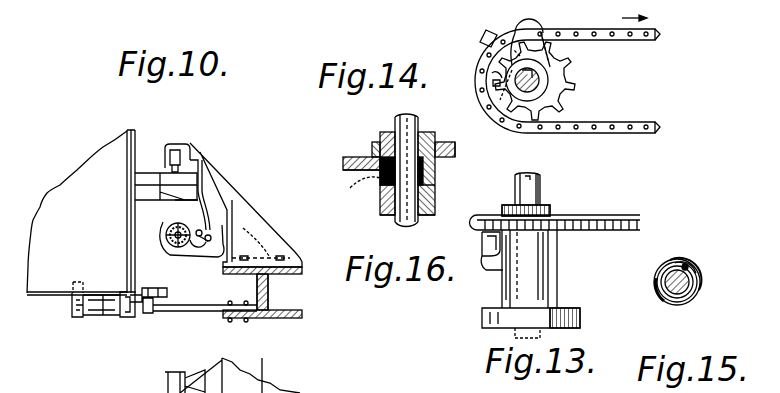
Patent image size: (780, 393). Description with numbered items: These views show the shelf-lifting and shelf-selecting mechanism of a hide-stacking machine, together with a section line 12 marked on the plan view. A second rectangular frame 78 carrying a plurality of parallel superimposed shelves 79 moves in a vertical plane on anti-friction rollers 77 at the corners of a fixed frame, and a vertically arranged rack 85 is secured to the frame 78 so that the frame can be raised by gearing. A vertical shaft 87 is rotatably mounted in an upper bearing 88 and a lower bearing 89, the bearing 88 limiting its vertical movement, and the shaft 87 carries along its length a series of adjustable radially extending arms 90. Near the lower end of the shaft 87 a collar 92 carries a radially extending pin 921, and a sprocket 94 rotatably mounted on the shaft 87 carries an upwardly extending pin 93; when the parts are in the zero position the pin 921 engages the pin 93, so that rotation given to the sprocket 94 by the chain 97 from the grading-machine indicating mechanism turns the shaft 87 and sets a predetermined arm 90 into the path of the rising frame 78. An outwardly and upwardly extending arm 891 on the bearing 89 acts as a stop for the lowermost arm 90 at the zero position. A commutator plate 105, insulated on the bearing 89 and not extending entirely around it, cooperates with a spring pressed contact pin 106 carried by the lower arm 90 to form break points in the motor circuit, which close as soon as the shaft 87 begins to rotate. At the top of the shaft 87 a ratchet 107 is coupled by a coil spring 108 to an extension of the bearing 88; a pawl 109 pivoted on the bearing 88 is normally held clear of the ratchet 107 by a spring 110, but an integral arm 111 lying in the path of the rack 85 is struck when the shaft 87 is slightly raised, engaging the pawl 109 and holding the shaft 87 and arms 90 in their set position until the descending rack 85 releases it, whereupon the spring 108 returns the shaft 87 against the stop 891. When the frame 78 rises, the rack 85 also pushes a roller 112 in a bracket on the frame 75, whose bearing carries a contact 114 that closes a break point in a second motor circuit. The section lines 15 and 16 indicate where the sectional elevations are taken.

In FIG. 10, the section line 12- 12 is at (200, 145).
In FIG. 13, the section line 15— 15 is at (470, 240).
In FIG. 15, the section line 16— 16 is at (678, 255).
In FIG. 10, the rectangular frame 75 is at (270, 297).
In FIG. 10, the anti-friction rollers 77 is at (175, 292).
In FIG. 10, the rectangular frame 78 is at (127, 227).
In FIG. 10, the shelves 79 is at (37, 285).
In FIG. 10, the rack 85 is at (160, 173).
In FIG. 10, the shaft 87 is at (166, 242).
In FIG. 14, the shaft 87 is at (546, 65).
In FIG. 16, the shaft 87 is at (397, 220).
In FIG. 13, the shaft 87 is at (540, 178).
In FIG. 15, the shaft 87 is at (690, 283).
In FIG. 10, the bearing 88 is at (215, 243).
In FIG. 16, the bearing 89 is at (380, 207).
In FIG. 13, the bearing 89 is at (510, 293).
In FIG. 15, the bearing 89 is at (695, 300).
In FIG. 16, the radially extending arms 90 is at (347, 157).
In FIG. 16, the arm 891 is at (347, 168).
In FIG. 13, the arm 891 is at (482, 237).
In FIG. 14, the collar 92 is at (550, 82).
In FIG. 16, the collar 92 is at (395, 128).
In FIG. 13, the collar 92 is at (552, 208).
In FIG. 14, the radially extending pin 921 is at (498, 73).
In FIG. 14, the pin 93 is at (492, 103).
In FIG. 13, the pin 93 is at (502, 210).
In FIG. 14, the sprocket 94 is at (560, 104).
In FIG. 14, the chain 97 is at (650, 122).
In FIG. 13, the chain 97 is at (640, 215).
In FIG. 16, the commutator plate 105 is at (377, 183).
In FIG. 15, the commutator plate 105 is at (643, 275).
In FIG. 10, the contact pin 106 is at (203, 235).
In FIG. 16, the contact pin 106 is at (382, 143).
In FIG. 13, the contact pin 106 is at (558, 250).
In FIG. 15, the contact pin 106 is at (689, 266).
In FIG. 10, the ratchet 107 is at (150, 392).
In FIG. 10, the coil spring 108 is at (200, 392).
In FIG. 10, the pawl 109 is at (195, 252).
In FIG. 10, the spring 110 is at (236, 214).
In FIG. 10, the arm 111 is at (207, 183).
In FIG. 10, the roller 112 is at (170, 144).
In FIG. 10, the contact 114 is at (235, 392).